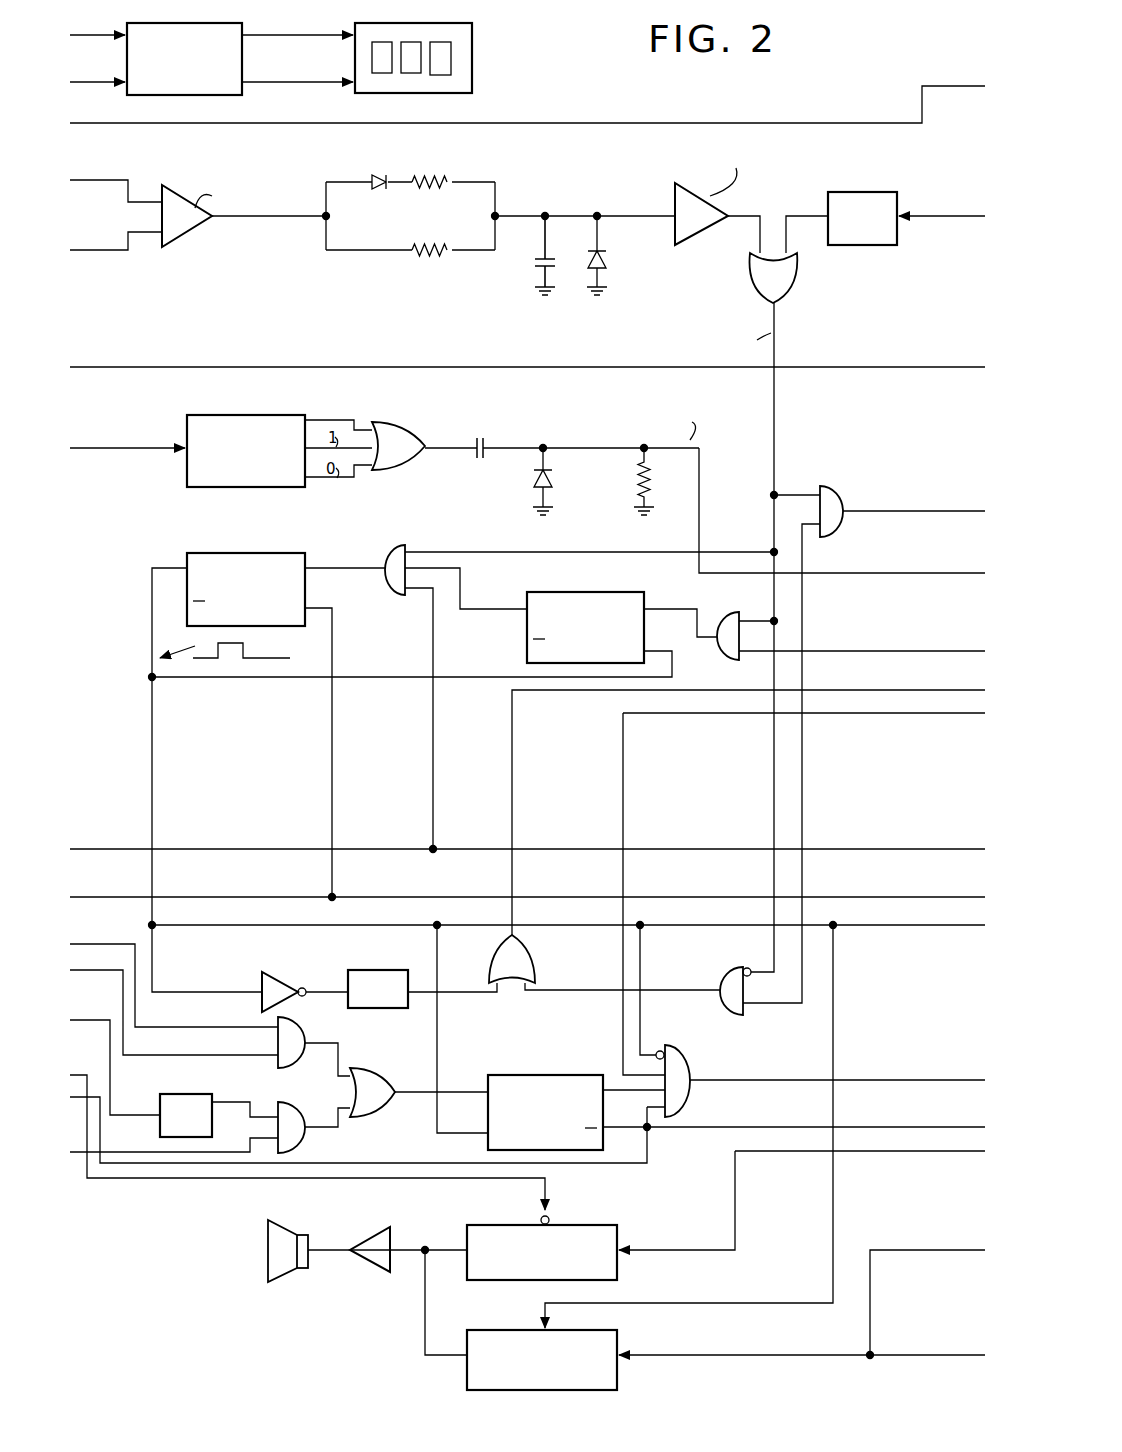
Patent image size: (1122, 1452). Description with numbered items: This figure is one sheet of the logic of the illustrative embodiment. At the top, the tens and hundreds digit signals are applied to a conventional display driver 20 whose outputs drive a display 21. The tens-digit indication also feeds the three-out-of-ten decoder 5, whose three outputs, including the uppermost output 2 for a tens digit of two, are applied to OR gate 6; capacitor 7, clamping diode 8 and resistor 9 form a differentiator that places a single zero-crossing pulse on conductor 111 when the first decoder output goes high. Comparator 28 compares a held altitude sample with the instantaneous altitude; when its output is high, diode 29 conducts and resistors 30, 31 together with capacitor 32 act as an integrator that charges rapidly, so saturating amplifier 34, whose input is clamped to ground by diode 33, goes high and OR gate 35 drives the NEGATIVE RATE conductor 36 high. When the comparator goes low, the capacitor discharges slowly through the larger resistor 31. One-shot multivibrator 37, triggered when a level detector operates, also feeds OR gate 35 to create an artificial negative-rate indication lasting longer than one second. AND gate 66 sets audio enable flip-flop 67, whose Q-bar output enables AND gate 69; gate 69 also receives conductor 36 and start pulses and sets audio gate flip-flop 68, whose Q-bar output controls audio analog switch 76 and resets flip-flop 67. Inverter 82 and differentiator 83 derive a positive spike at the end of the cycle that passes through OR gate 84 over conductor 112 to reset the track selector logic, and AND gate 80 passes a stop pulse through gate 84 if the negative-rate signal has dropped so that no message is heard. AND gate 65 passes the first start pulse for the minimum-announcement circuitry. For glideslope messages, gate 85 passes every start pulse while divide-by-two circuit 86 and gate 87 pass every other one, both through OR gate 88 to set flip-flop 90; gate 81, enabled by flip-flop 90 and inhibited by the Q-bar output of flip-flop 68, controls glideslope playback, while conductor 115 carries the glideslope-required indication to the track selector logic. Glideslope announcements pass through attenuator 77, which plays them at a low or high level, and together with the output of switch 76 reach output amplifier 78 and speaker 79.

The display driver 20 is at (222, 5).
The display 21 is at (472, 47).
The comparator 28 is at (190, 233).
The diode 29 is at (381, 180).
The resistor 30 is at (440, 180).
The resistor 31 is at (427, 258).
The capacitor 32 is at (538, 262).
The diode 33 is at (602, 255).
The saturating amplifier 34 is at (700, 240).
The OR gate 35 is at (795, 283).
The NEGATIVE RATE conductor 36 is at (776, 355).
The one-shot multivibrator 37 is at (892, 194).
The 3-out-of-10 decoder 5 is at (260, 416).
The decoder output line 2 is at (338, 421).
The OR gate 6 is at (404, 422).
The capacitor 7 is at (481, 433).
The diode 8 is at (550, 481).
The resistor 9 is at (640, 477).
The conductor 111 is at (702, 487).
The AND gate 65 is at (826, 486).
The audio gate flip-flop 68 is at (186, 560).
The AND gate 69 is at (398, 548).
The AND gate 66 is at (740, 612).
The audio enable flip-flop 67 is at (527, 645).
The conductor 112 is at (968, 692).
The inverter 82 is at (278, 973).
The differentiator 83 is at (388, 968).
The OR gate 84 is at (488, 963).
The AND gate 80 is at (724, 968).
The gate 81 is at (686, 1069).
The AND gate 85 is at (308, 1028).
The divide-by-two circuit 86 is at (208, 1095).
The gate 87 is at (307, 1118).
The OR gate 88 is at (392, 1112).
The flip-flop 90 is at (578, 1075).
The conductor 115 is at (966, 1118).
The speaker 79 is at (268, 1240).
The output amplifier 78 is at (374, 1232).
The attenuator 77 is at (596, 1224).
The audio analog switch 76 is at (504, 1330).